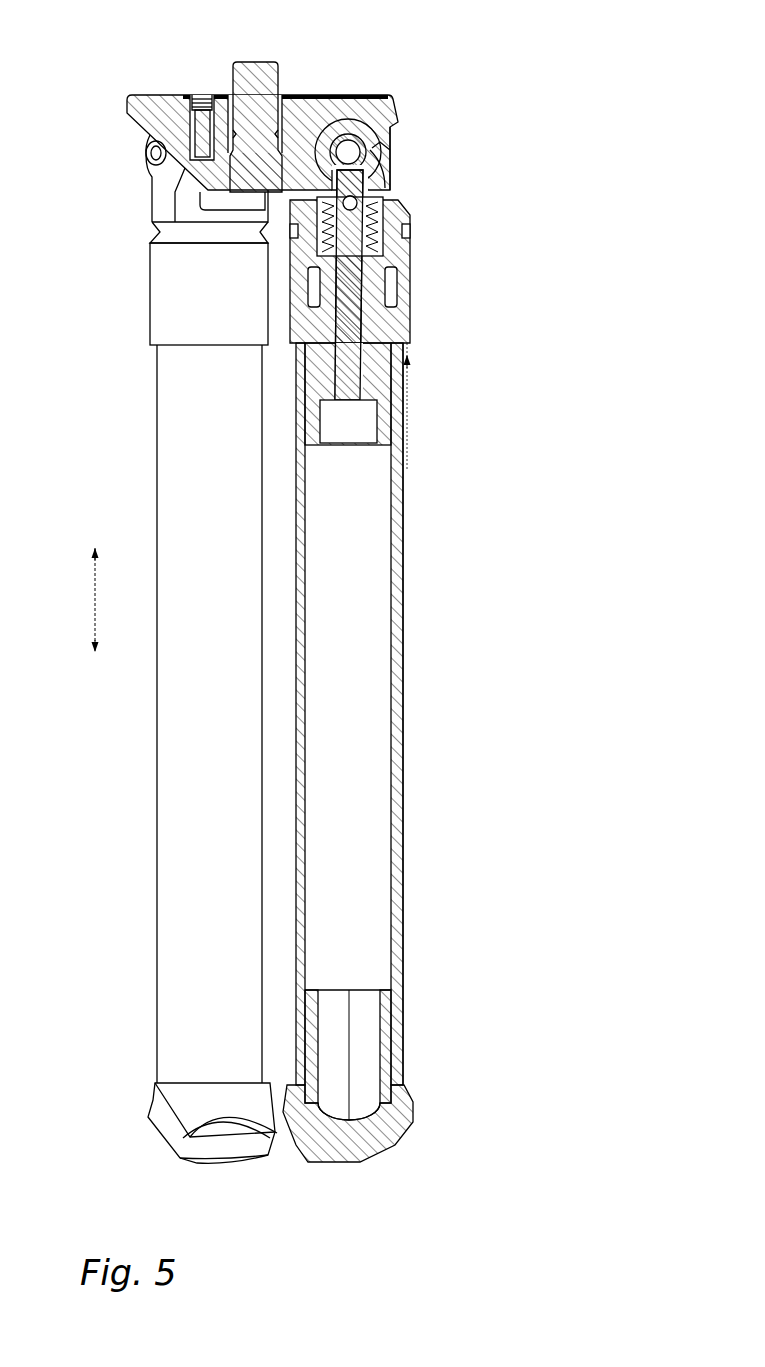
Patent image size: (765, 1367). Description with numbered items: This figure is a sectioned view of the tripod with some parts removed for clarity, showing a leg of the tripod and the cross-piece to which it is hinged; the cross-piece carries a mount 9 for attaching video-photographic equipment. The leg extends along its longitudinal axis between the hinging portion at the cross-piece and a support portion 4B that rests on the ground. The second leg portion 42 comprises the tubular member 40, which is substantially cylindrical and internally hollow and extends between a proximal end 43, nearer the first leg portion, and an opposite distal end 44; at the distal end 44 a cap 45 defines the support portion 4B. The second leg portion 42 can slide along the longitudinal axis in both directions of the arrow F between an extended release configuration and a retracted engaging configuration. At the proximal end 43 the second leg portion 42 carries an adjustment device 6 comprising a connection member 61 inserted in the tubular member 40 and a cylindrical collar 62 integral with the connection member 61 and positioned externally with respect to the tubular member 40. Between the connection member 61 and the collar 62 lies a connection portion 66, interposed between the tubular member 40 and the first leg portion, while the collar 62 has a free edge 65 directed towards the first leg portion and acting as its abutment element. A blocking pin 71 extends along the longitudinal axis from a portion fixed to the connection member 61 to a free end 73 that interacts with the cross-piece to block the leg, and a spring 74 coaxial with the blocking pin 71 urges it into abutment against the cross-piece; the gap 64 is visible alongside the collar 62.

The mount 9 is at (287, 58).
The free end 73 is at (382, 180).
The spring 74 is at (390, 163).
The free edge 65 is at (402, 235).
The connection portion 66 is at (410, 300).
The adjustment device 6 is at (442, 291).
The cylindrical collar 62 is at (405, 347).
The gap 64 is at (406, 393).
The proximal end 43 is at (427, 408).
The second leg portion 42 is at (503, 574).
The tubular member 40 is at (412, 680).
The distal end 44 is at (424, 1019).
The cap 45 is at (355, 1110).
The connection member 61 is at (323, 445).
The blocking pin 71 is at (335, 289).
The arrow F is at (95, 600).
The support portion 4B is at (358, 1195).